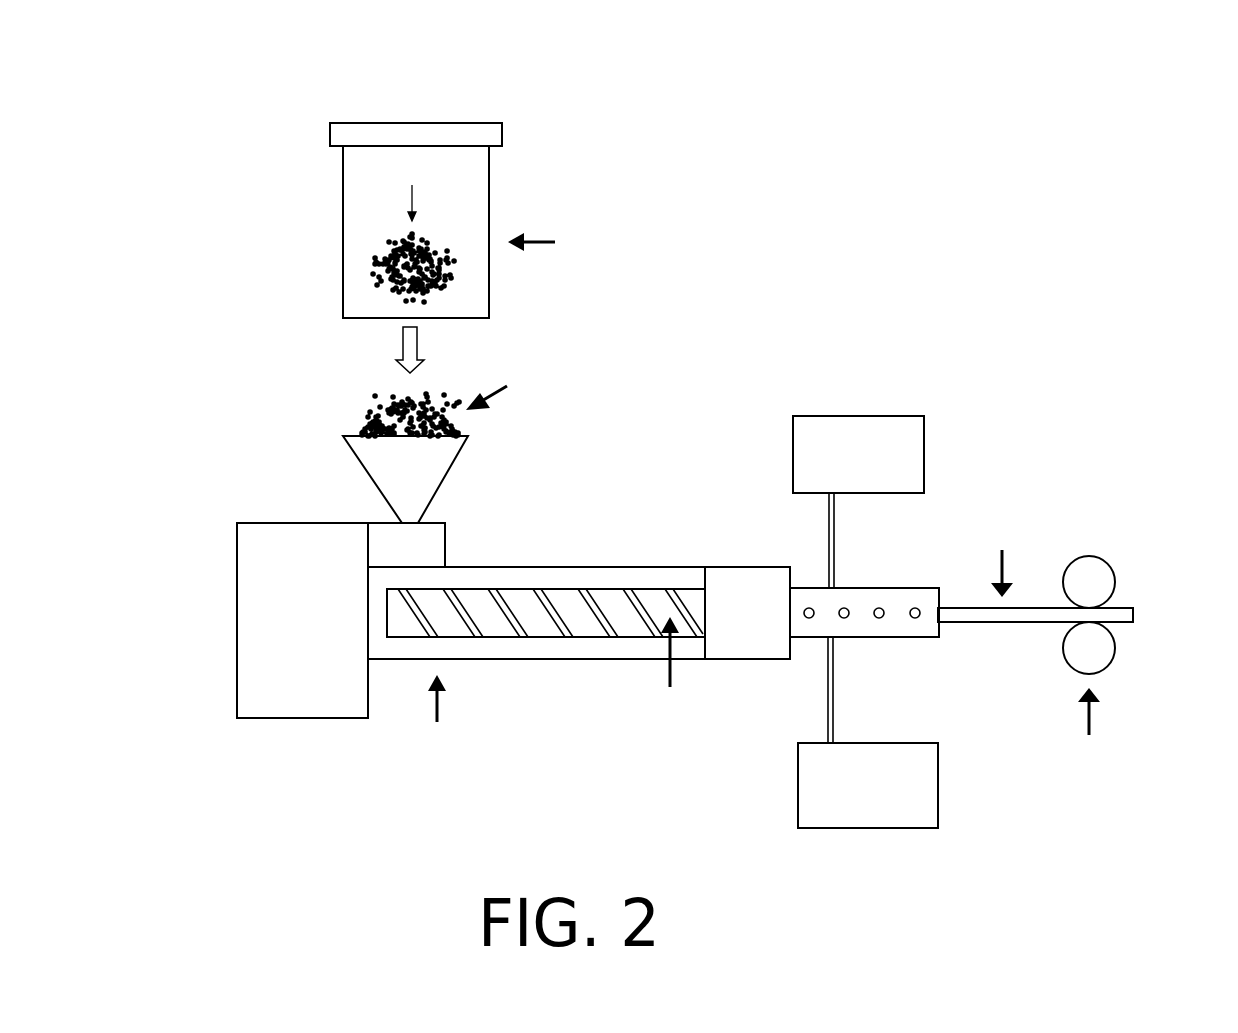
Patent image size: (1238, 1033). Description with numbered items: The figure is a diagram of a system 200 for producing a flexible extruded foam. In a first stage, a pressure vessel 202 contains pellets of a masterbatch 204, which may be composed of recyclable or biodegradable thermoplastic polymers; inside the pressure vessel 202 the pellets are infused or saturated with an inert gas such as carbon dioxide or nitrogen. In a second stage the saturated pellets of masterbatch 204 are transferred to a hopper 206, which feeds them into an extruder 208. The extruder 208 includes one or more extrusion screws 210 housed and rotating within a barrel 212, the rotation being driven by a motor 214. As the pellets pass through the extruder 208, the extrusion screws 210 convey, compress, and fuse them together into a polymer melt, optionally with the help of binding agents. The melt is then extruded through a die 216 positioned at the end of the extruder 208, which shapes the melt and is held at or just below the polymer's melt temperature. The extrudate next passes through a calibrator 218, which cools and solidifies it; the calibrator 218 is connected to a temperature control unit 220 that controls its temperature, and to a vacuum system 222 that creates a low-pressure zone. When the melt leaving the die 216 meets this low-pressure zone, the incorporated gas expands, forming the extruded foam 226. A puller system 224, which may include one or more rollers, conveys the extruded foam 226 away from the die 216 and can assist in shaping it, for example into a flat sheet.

The system 200 is at (953, 97).
The pressure vessel 202 is at (472, 195).
The pellets of masterbatch 204 is at (380, 257).
The hopper 206 is at (430, 485).
The extruder 208 is at (538, 650).
The extrusion screw 210 is at (615, 618).
The barrel 212 is at (389, 648).
The motor 214 is at (258, 568).
The die 216 is at (745, 647).
The calibrator 218 is at (932, 628).
The temperature control unit 220 is at (852, 427).
The vacuum system 222 is at (901, 822).
The puller system 224 is at (1088, 573).
The extruded foam 226 is at (1122, 617).